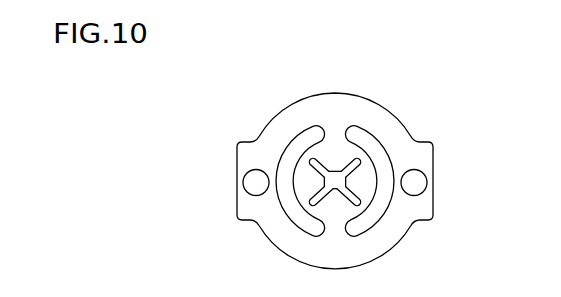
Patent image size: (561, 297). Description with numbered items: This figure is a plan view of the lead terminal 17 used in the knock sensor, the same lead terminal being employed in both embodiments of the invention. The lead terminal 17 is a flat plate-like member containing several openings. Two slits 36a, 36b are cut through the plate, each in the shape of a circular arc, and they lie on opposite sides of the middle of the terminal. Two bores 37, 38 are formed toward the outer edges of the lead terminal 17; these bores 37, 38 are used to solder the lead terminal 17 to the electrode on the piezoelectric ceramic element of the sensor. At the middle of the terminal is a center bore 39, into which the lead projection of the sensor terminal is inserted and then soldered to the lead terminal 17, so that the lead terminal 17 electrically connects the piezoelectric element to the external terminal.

The lead terminal 17 is at (370, 102).
The slit 36a is at (307, 138).
The slit 36b is at (365, 139).
The bore 37 is at (248, 183).
The bore 38 is at (415, 183).
The center bore 39 is at (333, 180).